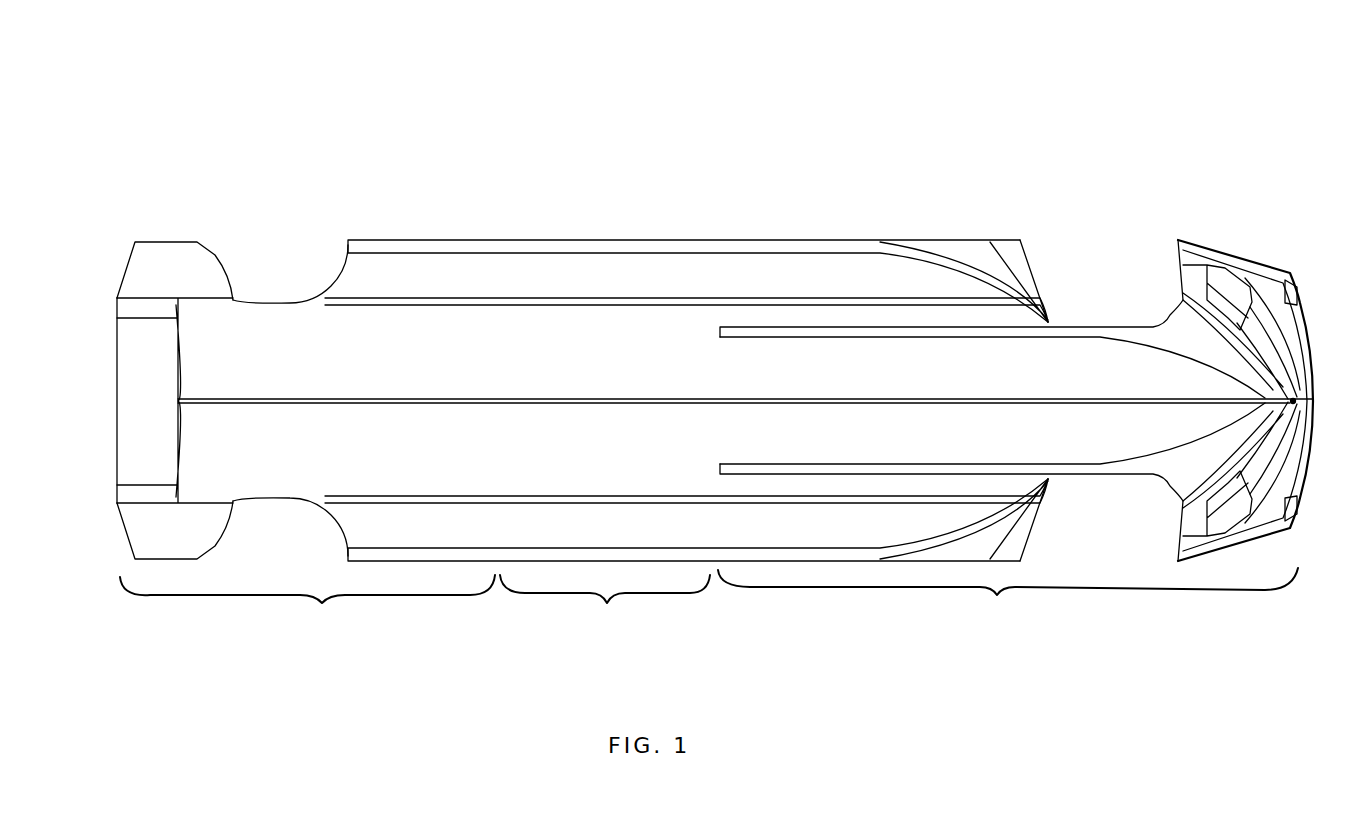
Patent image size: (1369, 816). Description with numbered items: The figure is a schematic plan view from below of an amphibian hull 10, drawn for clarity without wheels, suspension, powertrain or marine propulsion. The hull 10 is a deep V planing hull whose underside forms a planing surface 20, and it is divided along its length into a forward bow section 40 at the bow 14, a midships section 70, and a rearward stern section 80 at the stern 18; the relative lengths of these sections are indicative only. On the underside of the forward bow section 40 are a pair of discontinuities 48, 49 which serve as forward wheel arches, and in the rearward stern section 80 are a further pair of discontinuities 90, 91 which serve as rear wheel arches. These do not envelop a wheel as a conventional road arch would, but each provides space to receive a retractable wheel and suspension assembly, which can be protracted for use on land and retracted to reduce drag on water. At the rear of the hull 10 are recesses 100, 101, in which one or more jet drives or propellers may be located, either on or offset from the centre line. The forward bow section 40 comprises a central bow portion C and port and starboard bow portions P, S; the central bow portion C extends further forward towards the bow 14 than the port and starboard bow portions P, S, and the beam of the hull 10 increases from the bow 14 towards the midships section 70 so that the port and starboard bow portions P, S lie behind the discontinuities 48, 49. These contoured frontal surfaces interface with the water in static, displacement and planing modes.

The amphibian hull 10 is at (895, 96).
The bow 14 is at (1330, 389).
The stern 18 is at (84, 404).
The planing surface 20 is at (488, 372).
The forward bow section 40 is at (1008, 596).
The discontinuity serving as forward wheel arch 48 is at (1105, 283).
The discontinuity serving as forward wheel arch 49 is at (1100, 522).
The midships section 70 is at (605, 602).
The rearward stern section 80 is at (307, 602).
The discontinuity serving as rear wheel arch 90 is at (285, 280).
The discontinuity serving as rear wheel arch 91 is at (283, 543).
The recess 100 is at (150, 368).
The recess 101 is at (148, 452).
The starboard bow portion S is at (1008, 306).
The port bow portion P is at (1003, 521).
The central bow portion C is at (1227, 396).